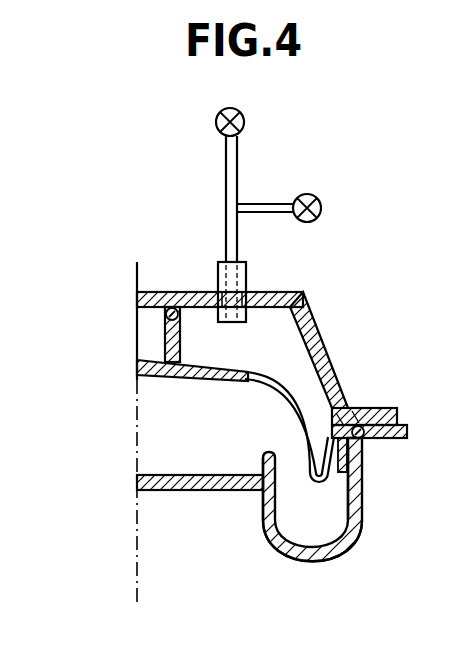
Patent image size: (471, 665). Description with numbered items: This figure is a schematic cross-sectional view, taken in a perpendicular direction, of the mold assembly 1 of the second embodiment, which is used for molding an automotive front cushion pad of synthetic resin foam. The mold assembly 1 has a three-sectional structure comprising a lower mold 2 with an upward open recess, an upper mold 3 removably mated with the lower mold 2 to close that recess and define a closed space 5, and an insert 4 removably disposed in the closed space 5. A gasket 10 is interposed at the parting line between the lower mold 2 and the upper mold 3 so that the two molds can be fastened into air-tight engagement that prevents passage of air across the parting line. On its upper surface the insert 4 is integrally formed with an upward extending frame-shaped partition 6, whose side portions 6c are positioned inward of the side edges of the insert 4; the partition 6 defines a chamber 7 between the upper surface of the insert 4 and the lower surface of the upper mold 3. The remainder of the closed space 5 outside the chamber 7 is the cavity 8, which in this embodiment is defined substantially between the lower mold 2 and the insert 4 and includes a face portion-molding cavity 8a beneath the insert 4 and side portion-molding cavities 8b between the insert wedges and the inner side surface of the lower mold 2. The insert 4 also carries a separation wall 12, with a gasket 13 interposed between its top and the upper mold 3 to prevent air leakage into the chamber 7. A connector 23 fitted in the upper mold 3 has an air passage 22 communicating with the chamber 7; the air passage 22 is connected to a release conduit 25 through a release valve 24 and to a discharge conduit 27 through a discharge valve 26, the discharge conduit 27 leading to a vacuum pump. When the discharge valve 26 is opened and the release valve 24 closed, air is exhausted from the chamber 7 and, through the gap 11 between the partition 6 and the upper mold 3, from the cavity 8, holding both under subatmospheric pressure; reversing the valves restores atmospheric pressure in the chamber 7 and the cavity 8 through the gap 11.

The mold assembly 1 is at (273, 541).
The lower mold 2 is at (167, 490).
The upper mold 3 is at (152, 292).
The insert 4 is at (268, 373).
The closed space 5 is at (158, 438).
The partition 6 is at (358, 446).
The side portions 6c is at (340, 466).
The chamber 7 is at (297, 366).
The cavity 8 is at (312, 512).
The face portion-molding cavity 8a is at (242, 455).
The side portion-molding cavities 8b is at (352, 492).
The gasket 10 is at (375, 408).
The gap 11 is at (345, 430).
The separation wall 12 is at (176, 330).
The gasket 13 is at (137, 316).
The air passage 22 is at (246, 283).
The connector 23 is at (246, 272).
The release valve 24 is at (322, 208).
The release conduit 25 is at (272, 204).
The discharge valve 26 is at (246, 122).
The discharge conduit 27 is at (226, 168).